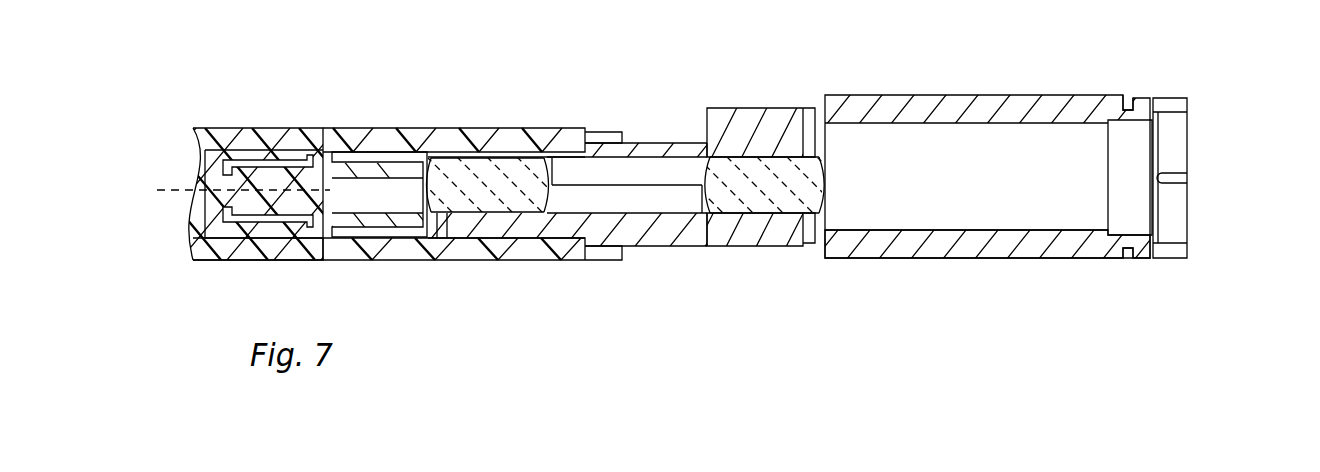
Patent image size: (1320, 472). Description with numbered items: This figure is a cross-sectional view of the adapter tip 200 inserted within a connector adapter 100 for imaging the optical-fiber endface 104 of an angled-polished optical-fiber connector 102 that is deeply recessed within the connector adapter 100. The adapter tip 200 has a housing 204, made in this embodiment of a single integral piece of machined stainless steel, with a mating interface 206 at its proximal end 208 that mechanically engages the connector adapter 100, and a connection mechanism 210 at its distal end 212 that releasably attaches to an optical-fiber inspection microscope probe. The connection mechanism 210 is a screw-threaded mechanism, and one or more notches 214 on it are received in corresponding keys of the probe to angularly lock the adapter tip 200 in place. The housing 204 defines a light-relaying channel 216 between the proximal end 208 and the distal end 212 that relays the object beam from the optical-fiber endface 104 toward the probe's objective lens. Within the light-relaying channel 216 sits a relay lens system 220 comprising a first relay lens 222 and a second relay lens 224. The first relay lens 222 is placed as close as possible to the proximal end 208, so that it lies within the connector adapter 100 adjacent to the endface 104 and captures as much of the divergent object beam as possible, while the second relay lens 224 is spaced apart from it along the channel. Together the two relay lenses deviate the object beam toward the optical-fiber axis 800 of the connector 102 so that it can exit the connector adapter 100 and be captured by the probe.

The optical-fiber axis 800 is at (178, 188).
The connector adapter 100 is at (257, 128).
The angled-polished optical-fiber connector 102 is at (187, 228).
The optical-fiber endface 104 is at (322, 202).
The mating interface 206 is at (458, 152).
The proximal end 208 is at (490, 153).
The first relay lens 222 is at (522, 215).
The light-relaying channel 216 is at (647, 200).
The second relay lens 224 is at (765, 213).
The relay lens system 220 is at (805, 320).
The adapter tip 200 is at (950, 193).
The housing 204 is at (855, 258).
The connection mechanism 210 is at (1167, 97).
The distal end 212 is at (1143, 259).
The notches 214 is at (1182, 180).